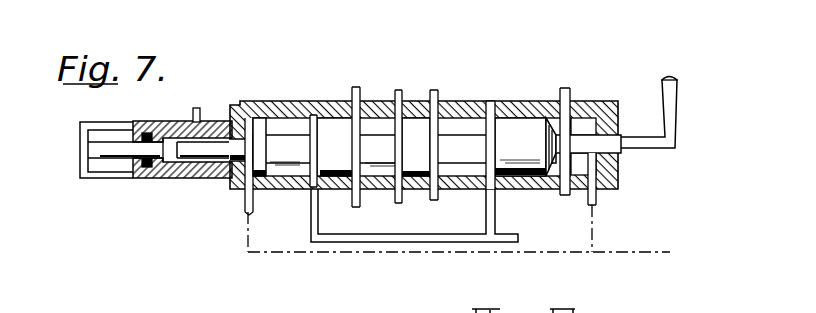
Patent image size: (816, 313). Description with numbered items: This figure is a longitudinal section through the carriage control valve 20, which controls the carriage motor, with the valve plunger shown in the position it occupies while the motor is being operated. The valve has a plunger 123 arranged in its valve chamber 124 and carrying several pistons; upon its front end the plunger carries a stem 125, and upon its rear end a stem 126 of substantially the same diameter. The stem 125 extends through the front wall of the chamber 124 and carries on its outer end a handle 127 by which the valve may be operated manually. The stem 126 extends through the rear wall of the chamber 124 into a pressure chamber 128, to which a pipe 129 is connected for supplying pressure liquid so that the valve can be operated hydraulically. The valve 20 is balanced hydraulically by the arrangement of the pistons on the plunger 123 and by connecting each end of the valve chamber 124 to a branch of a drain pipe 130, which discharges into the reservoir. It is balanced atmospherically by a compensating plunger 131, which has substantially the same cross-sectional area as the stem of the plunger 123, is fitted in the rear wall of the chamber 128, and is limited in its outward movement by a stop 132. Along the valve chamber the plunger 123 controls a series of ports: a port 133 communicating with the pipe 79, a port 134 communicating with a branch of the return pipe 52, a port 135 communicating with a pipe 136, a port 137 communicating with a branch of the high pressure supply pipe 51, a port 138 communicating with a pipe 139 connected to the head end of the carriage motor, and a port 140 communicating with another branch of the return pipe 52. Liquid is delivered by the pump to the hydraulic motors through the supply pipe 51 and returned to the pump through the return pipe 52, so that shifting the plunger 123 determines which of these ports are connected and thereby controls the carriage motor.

The carriage control valve 20 is at (618, 188).
The high pressure supply pipe 51 is at (400, 201).
The return pipe 52 is at (447, 236).
The pipe 79 is at (562, 92).
The plunger 123 is at (404, 147).
The valve chamber 124 is at (583, 124).
The stem 125 is at (612, 152).
The stem 126 is at (213, 148).
The handle 127 is at (679, 87).
The pressure chamber 128 is at (170, 160).
The pipe 129 is at (192, 111).
The drain pipe 130 is at (653, 249).
The compensating plunger 131 is at (100, 150).
The stop 132 is at (85, 177).
The port 133 is at (567, 189).
The port 134 is at (490, 101).
The port 135 is at (437, 192).
The pipe 136 is at (436, 88).
The port 137 is at (400, 101).
The port 138 is at (356, 190).
The pipe 139 is at (353, 88).
The port 140 is at (312, 104).